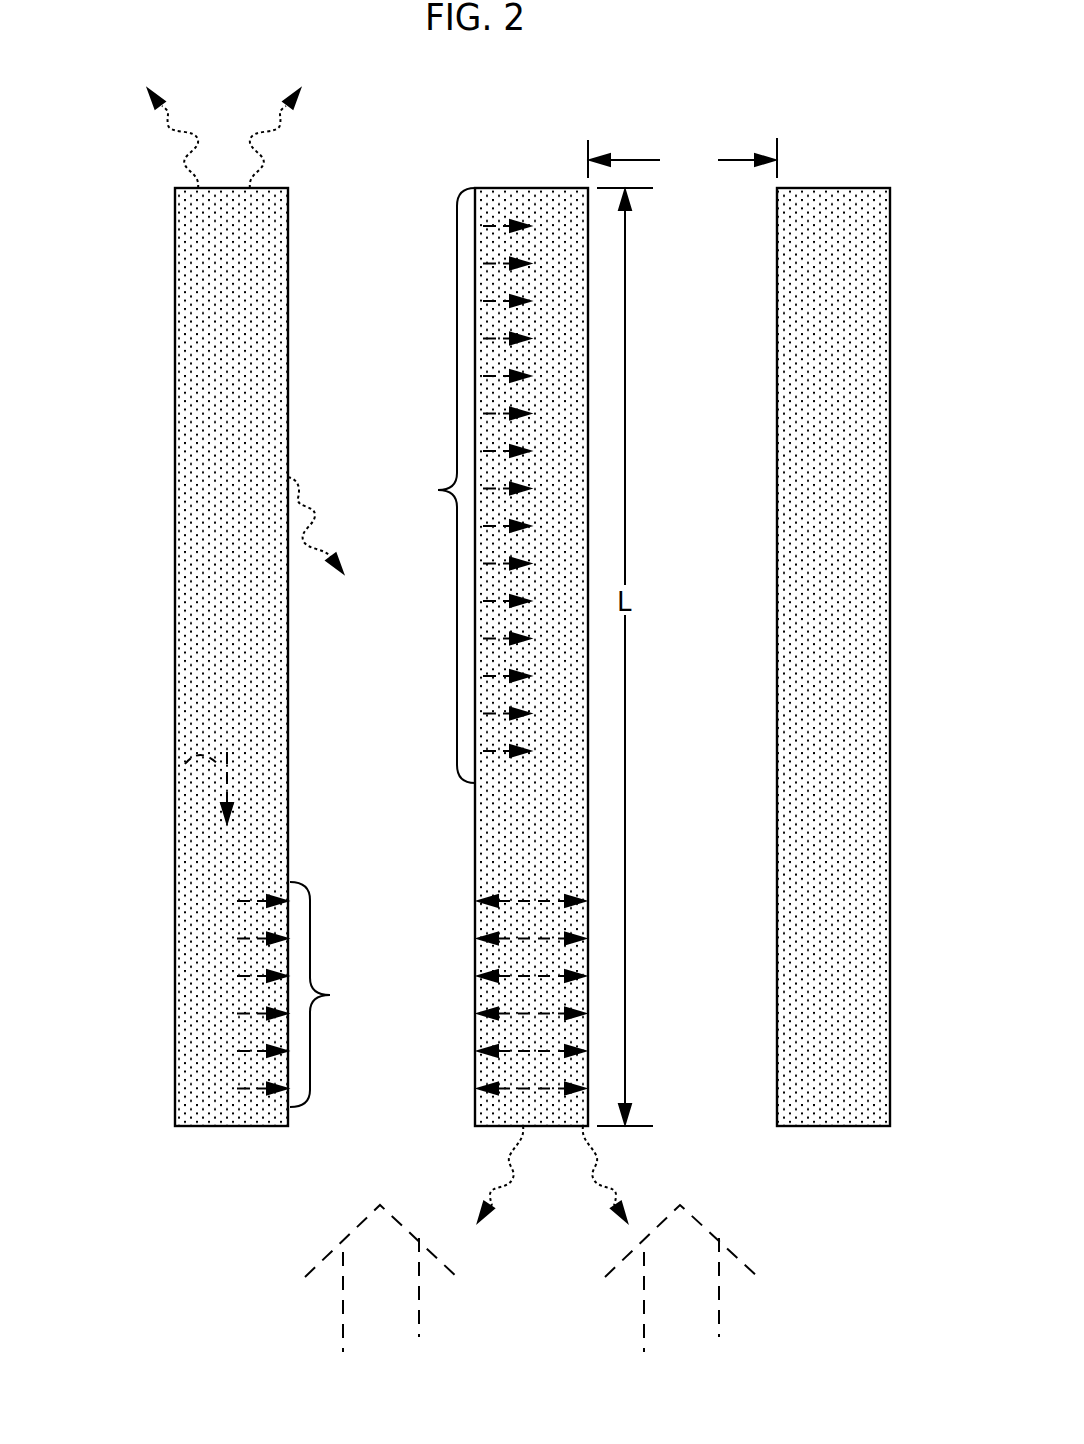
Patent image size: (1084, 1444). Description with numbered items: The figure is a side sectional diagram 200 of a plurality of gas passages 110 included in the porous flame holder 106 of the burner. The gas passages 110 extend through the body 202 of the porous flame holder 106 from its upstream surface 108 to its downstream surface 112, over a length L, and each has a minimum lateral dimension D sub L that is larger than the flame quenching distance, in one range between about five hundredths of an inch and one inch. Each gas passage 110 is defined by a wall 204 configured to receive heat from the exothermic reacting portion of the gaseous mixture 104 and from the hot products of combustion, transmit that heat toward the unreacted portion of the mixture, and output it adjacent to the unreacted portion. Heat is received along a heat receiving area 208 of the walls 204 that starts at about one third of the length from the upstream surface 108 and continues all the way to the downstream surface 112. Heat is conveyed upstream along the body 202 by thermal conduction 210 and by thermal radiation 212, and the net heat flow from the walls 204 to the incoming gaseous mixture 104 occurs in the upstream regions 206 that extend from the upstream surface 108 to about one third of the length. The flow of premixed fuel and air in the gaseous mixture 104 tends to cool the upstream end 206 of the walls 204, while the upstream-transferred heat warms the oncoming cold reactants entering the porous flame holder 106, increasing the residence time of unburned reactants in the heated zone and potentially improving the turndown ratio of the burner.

The side sectional diagram 200 is at (803, 106).
The body 202 is at (248, 590).
The wall 204 is at (305, 282).
The upstream end region 206 is at (411, 994).
The heat receiving area 208 is at (438, 490).
The thermal conduction 210 is at (191, 787).
The thermal radiation 212 is at (200, 130).
The gaseous mixture 104 is at (343, 1304).
The porous flame holder 106 is at (175, 948).
The upstream surface 108 is at (232, 1145).
The gas passages 110 is at (344, 1116).
The downstream surface 112 is at (554, 170).